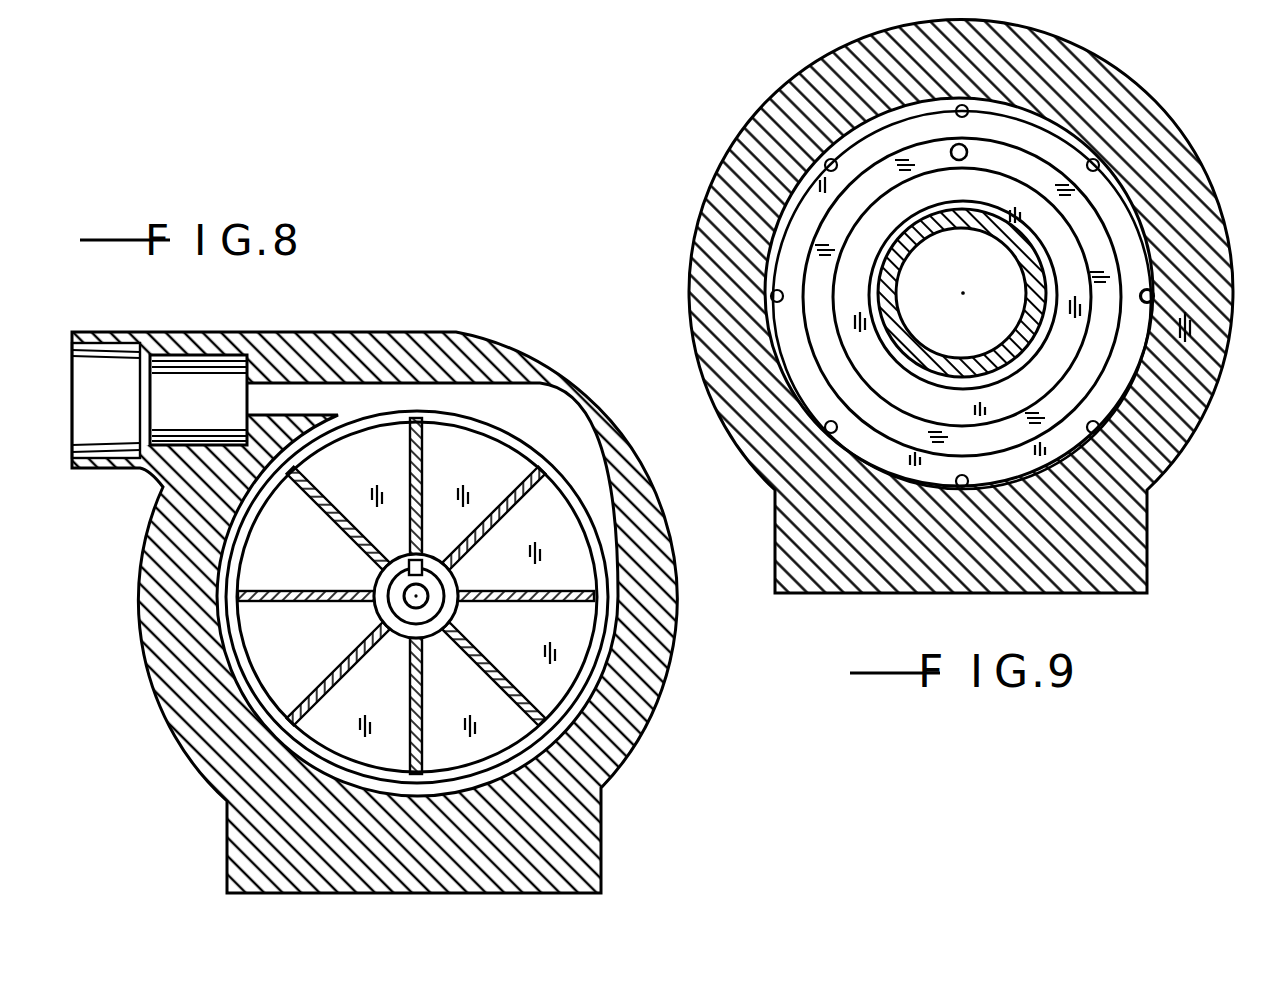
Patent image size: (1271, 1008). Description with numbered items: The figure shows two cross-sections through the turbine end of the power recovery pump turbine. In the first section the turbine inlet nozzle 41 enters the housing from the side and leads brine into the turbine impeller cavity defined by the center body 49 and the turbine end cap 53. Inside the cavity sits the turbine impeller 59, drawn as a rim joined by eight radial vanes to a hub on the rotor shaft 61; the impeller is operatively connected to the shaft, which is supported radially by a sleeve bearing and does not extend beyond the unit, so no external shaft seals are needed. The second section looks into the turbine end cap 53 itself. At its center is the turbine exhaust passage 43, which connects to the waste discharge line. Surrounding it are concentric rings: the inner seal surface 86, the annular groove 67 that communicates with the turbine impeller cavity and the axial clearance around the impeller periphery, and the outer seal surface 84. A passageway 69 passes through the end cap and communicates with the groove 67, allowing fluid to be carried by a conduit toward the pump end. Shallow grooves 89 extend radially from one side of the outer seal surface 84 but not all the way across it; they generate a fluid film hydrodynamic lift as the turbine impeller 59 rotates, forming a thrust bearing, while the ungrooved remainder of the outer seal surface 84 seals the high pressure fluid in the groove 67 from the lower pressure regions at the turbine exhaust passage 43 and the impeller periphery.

In FIG. 8, the turbine inlet nozzle 41 is at (182, 382).
In FIG. 8, the center body 49 is at (417, 522).
In FIG. 8, the turbine impeller 59 is at (304, 591).
In FIG. 8, the rotor shaft 61 is at (398, 598).
In FIG. 9, the turbine end cap 53 is at (695, 336).
In FIG. 9, the outer seal surface 84 is at (803, 213).
In FIG. 9, the groove 67 is at (870, 187).
In FIG. 9, the inner seal surface 86 is at (852, 283).
In FIG. 9, the turbine exhaust passage 43 is at (993, 317).
In FIG. 9, the passageway 69 is at (972, 152).
In FIG. 9, the shallow grooves 89 is at (1153, 290).